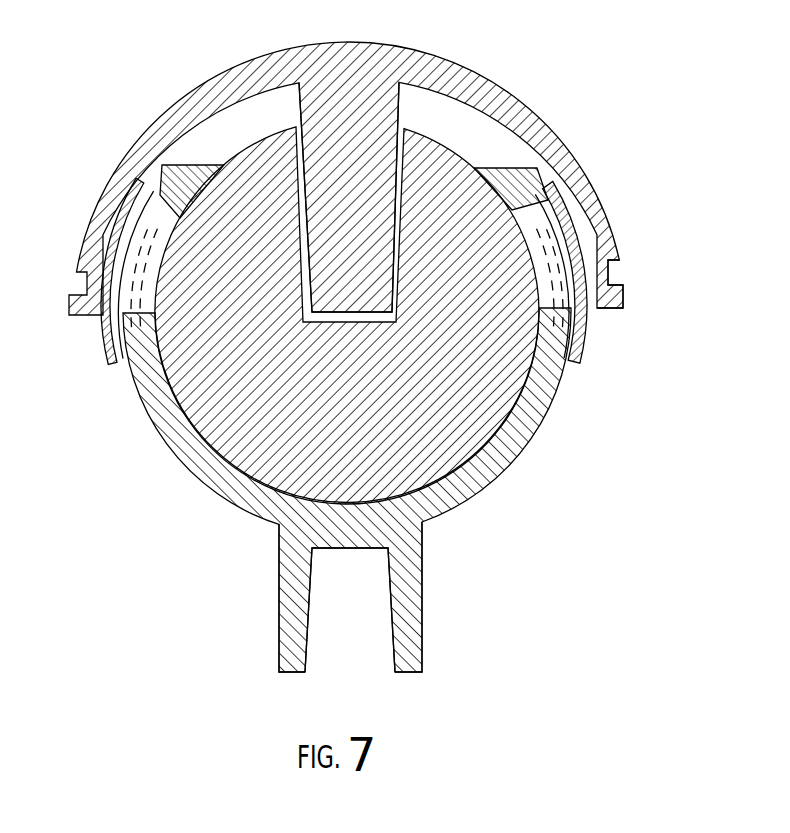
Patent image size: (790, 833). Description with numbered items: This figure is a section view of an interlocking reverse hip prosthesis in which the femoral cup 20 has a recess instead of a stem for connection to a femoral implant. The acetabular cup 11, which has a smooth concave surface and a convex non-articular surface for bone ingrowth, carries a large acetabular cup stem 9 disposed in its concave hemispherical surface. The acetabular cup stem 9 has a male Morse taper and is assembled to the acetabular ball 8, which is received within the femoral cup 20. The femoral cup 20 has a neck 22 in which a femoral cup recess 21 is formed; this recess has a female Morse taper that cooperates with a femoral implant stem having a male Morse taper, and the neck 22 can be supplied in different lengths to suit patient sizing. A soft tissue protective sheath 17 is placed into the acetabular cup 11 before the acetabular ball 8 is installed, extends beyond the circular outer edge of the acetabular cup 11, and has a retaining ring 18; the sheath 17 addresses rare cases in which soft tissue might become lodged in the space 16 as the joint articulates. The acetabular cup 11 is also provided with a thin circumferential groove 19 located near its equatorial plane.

The acetabular ball 8 is at (272, 447).
The acetabular cup stem 9 is at (372, 118).
The acetabular cup 11 is at (568, 150).
The space 16 is at (245, 135).
The soft tissue protective sheath 17 is at (110, 332).
The retaining ring 18 is at (152, 188).
The circumferential groove 19 is at (621, 276).
The femoral cup 20 is at (525, 425).
The femoral cup recess 21 is at (312, 620).
The neck 22 is at (422, 592).